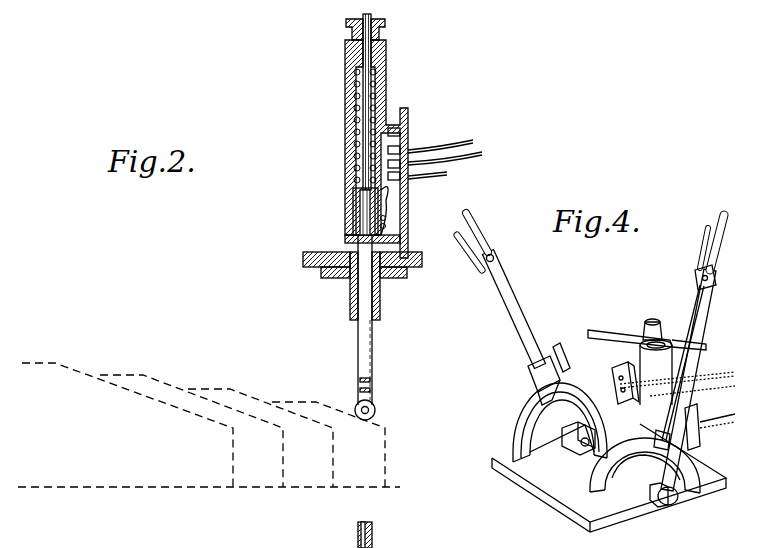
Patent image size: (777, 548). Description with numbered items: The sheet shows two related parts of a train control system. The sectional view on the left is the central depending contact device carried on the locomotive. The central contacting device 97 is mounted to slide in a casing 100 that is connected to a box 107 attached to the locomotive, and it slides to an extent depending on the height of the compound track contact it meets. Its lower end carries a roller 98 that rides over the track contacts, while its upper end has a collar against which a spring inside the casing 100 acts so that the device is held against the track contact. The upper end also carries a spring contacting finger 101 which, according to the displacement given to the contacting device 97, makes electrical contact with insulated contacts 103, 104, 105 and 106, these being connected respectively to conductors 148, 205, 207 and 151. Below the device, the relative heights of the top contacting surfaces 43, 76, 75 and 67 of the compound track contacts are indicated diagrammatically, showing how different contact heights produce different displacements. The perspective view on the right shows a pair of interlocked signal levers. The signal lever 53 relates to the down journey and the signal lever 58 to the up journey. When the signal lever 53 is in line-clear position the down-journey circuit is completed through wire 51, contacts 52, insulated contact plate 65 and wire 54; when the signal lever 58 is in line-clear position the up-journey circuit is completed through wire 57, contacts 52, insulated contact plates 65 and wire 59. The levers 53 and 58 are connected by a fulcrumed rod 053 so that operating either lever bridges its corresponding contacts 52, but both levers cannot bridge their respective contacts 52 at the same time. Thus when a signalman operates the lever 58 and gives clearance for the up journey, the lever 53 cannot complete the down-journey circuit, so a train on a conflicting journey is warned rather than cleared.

In FIG. 2, the casing 100 is at (386, 82).
In FIG. 2, the spring contacting finger 101 is at (380, 212).
In FIG. 2, the insulated contact 103 is at (396, 196).
In FIG. 2, the insulated contact 104 is at (403, 170).
In FIG. 2, the insulated contact 105 is at (405, 138).
In FIG. 2, the insulated contact 106 is at (393, 128).
In FIG. 2, the box 107 is at (404, 240).
In FIG. 2, the conductor 148 is at (448, 176).
In FIG. 2, the conductor 151 is at (409, 146).
In FIG. 2, the conductor 205 is at (462, 156).
In FIG. 2, the conductor 207 is at (440, 142).
In FIG. 2, the central contacting device 97 is at (368, 345).
In FIG. 2, the roller 98 is at (373, 408).
In FIG. 2, the top contacting surface 43 is at (50, 363).
In FIG. 2, the top contacting surface 76 is at (118, 375).
In FIG. 2, the top contacting surface 75 is at (200, 389).
In FIG. 2, the top contacting surface 67 is at (300, 402).
In FIG. 4, the signal lever 53 is at (506, 303).
In FIG. 4, the insulated contact plate 65 is at (549, 358).
In FIG. 4, the fulcrumed rod 053 is at (628, 340).
In FIG. 4, the signal lever 58 is at (706, 302).
In FIG. 4, the wire 54 is at (700, 362).
In FIG. 4, the wire 51 is at (700, 372).
In FIG. 4, the contacts 52 is at (614, 380).
In FIG. 4, the wire 57 is at (706, 418).
In FIG. 4, the wire 59 is at (708, 426).